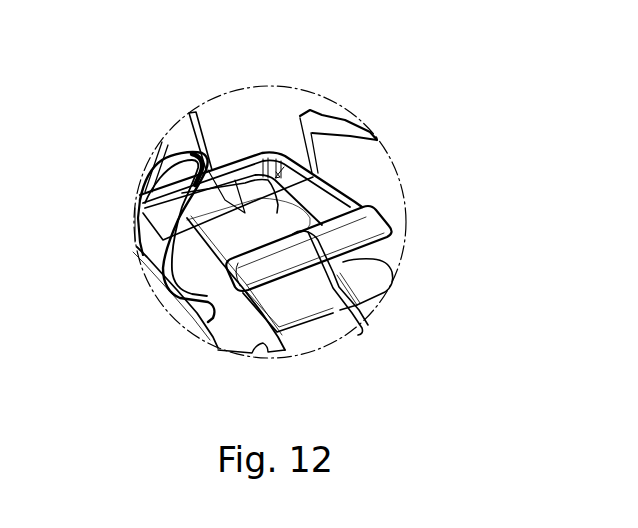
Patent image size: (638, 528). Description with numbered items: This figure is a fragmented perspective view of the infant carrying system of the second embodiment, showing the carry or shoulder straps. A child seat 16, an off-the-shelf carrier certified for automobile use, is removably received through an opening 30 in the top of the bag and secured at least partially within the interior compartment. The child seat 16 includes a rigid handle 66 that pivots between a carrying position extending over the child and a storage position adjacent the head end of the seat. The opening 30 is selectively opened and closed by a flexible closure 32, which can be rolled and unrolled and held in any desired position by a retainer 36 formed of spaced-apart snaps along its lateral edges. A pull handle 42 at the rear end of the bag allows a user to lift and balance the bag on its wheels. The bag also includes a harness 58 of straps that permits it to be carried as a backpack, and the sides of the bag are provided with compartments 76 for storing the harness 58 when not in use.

The child seat 16 is at (308, 175).
The opening 30 is at (312, 188).
The closure 32 is at (308, 313).
The retainer 36 is at (365, 262).
The pull handle 42 is at (208, 115).
The harness 58 is at (141, 195).
The rigid handle 66 is at (240, 156).
The compartments 76 is at (137, 247).